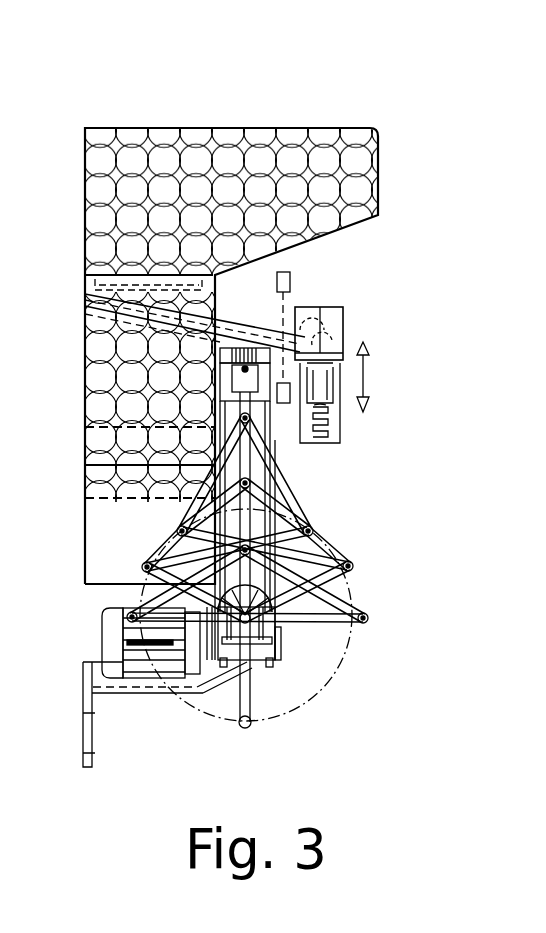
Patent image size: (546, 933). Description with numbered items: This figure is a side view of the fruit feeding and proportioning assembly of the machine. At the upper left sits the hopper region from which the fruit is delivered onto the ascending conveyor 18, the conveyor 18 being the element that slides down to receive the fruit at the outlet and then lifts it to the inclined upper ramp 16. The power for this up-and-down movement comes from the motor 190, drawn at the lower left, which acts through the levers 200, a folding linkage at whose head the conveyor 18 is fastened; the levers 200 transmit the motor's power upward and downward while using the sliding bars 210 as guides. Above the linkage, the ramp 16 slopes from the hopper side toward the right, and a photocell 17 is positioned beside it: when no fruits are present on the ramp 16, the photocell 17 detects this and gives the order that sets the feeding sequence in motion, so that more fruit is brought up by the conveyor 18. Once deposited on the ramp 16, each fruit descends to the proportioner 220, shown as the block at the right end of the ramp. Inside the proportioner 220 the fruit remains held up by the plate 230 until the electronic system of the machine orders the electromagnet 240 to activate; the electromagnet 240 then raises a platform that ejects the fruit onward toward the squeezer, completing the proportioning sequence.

The ramp 16 is at (234, 310).
The photocell 17 is at (290, 284).
The conveyor 18 is at (157, 280).
The motor 190 is at (115, 630).
The levers 200 is at (290, 488).
The sliding bars 210 is at (265, 536).
The proportioner 220 is at (343, 321).
The plate 230 is at (342, 360).
The electromagnet 240 is at (330, 418).